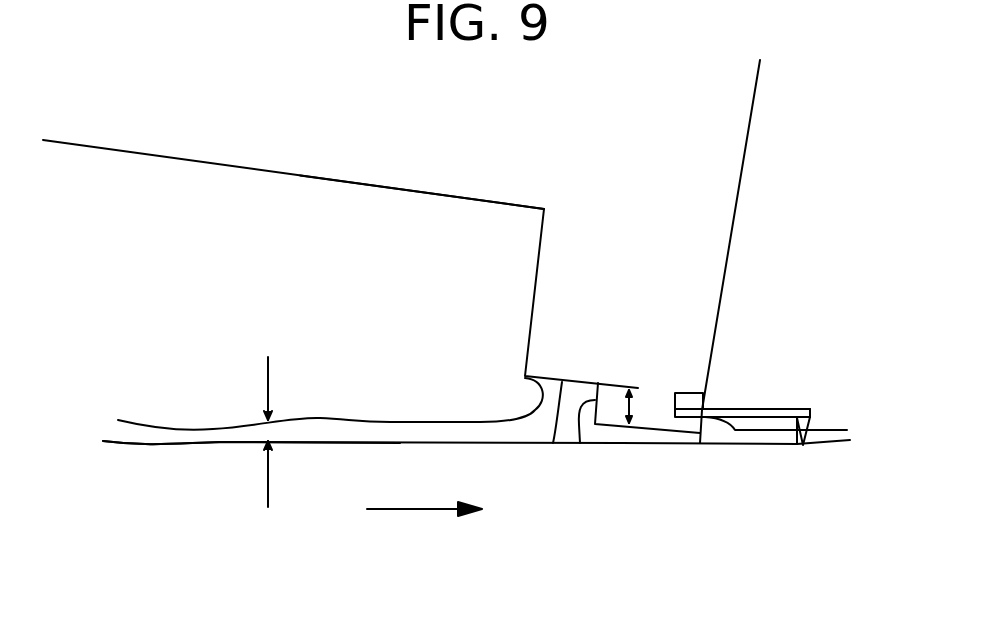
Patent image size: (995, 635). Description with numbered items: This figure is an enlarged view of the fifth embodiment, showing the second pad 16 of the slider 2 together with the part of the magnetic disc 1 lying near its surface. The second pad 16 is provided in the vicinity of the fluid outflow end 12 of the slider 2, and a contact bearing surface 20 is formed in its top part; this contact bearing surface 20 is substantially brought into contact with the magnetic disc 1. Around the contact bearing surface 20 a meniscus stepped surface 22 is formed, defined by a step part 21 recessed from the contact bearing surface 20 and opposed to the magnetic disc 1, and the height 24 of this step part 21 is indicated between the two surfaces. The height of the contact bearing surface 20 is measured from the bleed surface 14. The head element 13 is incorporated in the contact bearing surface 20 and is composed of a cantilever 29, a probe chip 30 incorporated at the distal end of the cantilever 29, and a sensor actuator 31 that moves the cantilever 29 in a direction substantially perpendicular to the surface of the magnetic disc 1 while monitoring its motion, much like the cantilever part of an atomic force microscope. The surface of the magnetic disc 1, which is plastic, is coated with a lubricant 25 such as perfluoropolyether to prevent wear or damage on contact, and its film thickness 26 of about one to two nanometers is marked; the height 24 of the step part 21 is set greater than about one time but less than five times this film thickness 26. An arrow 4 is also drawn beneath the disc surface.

The magnetic disc 1 is at (113, 468).
The slider 2 is at (115, 122).
The flow direction arrow 4 is at (413, 512).
The fluid outflow end 12 is at (700, 443).
The head element 13 is at (812, 412).
The bleed surface 14 is at (220, 167).
The second pad 16 is at (590, 308).
The contact bearing surface 20 is at (638, 433).
The step part 21 is at (580, 443).
The meniscus stepped surface 22 is at (553, 443).
The height of step part 24 is at (633, 410).
The lubricant 25 is at (197, 438).
The film thickness of lubricant 26 is at (267, 432).
The cantilever 29 is at (758, 408).
The probe chip 30 is at (813, 427).
The sensor actuator 31 is at (688, 402).